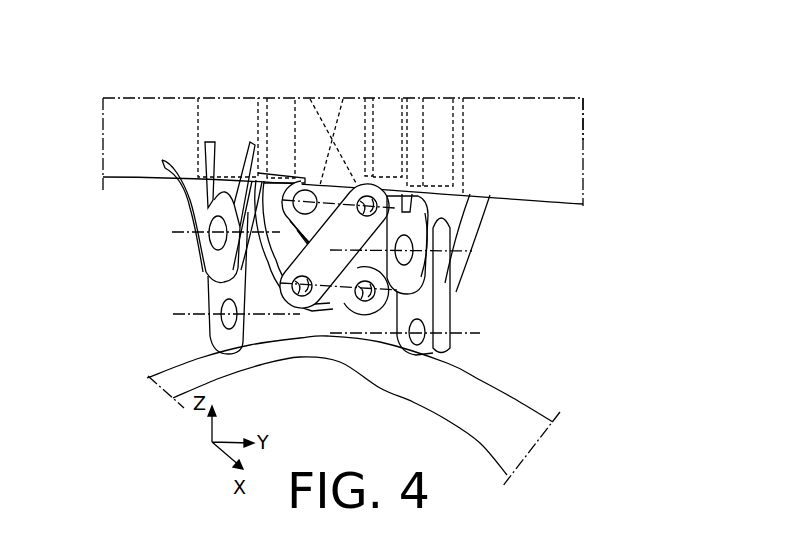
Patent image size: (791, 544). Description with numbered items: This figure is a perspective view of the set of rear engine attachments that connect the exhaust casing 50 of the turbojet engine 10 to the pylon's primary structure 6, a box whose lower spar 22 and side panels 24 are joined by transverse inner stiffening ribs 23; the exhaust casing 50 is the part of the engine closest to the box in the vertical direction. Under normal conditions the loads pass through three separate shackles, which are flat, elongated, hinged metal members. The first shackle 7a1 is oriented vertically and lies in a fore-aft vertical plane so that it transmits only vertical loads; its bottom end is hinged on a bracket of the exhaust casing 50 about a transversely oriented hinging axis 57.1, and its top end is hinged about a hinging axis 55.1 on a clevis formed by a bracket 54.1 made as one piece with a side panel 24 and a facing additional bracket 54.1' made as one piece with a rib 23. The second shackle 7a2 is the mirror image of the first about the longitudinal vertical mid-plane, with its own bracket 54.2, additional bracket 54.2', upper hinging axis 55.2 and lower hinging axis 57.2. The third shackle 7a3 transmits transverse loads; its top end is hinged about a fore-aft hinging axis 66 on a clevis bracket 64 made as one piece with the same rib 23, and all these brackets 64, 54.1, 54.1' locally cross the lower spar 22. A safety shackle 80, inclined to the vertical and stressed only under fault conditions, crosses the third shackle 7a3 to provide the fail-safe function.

The primary structure 6 is at (594, 124).
The lower spar 22 is at (122, 178).
The transverse inner stiffening rib 23 is at (461, 104).
The side panel 24 is at (534, 113).
The bracket 54.1 is at (185, 212).
The additional bracket 54.1' is at (243, 130).
The hinging axis 55.1 is at (172, 232).
The hinging axis 57.1 is at (173, 314).
The first shackle 7a1 is at (206, 299).
The bracket 54.2 is at (480, 244).
The additional bracket 54.2' is at (505, 220).
The hinging axis 55.2 is at (471, 253).
The hinging axis 57.2 is at (477, 334).
The second shackle 7a2 is at (450, 322).
The third shackle 7a3 is at (333, 306).
The bracket 64 is at (303, 185).
The hinging axis 66 is at (306, 202).
The safety shackle 80 is at (290, 318).
The exhaust casing 50 is at (512, 401).
The turbojet engine 10 is at (581, 393).